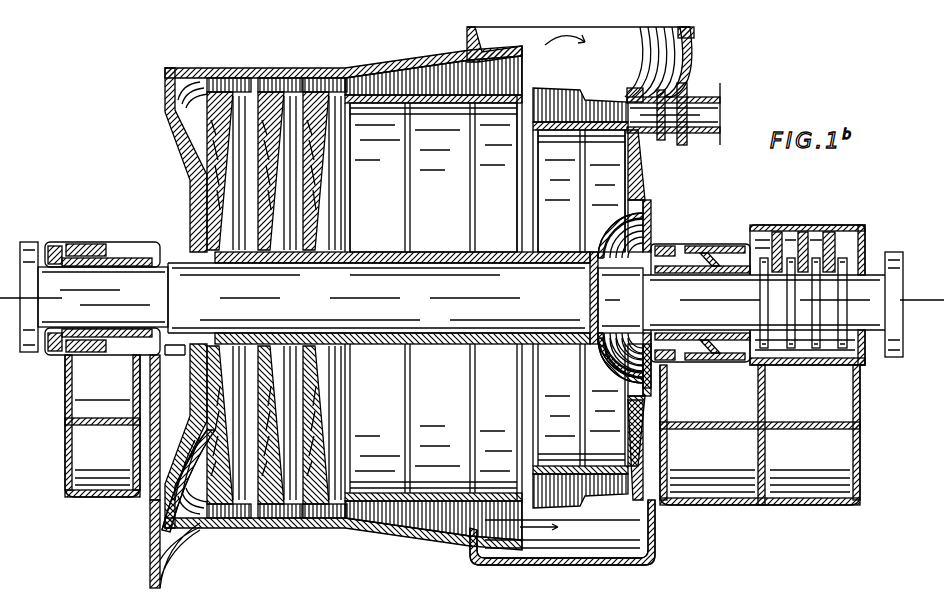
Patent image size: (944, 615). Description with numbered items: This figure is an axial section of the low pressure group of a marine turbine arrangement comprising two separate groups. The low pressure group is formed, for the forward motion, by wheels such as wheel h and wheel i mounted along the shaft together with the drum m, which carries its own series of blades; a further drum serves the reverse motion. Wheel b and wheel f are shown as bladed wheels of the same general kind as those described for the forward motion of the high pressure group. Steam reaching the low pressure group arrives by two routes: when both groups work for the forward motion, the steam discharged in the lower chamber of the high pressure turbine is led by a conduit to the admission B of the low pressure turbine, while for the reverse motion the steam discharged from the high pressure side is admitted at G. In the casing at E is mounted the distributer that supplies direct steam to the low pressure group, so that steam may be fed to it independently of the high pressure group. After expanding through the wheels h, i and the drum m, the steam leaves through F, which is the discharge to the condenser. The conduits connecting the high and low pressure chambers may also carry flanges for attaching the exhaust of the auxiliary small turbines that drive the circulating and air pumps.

The distributer E is at (397, 154).
The wheel h is at (229, 148).
The wheel i is at (280, 147).
The wheel b is at (325, 146).
The discharge to the condenser F is at (580, 51).
The drum m is at (433, 177).
The wheel f is at (581, 191).
The admission for reverse motion G is at (683, 114).
The admission of the low pressure B is at (166, 544).